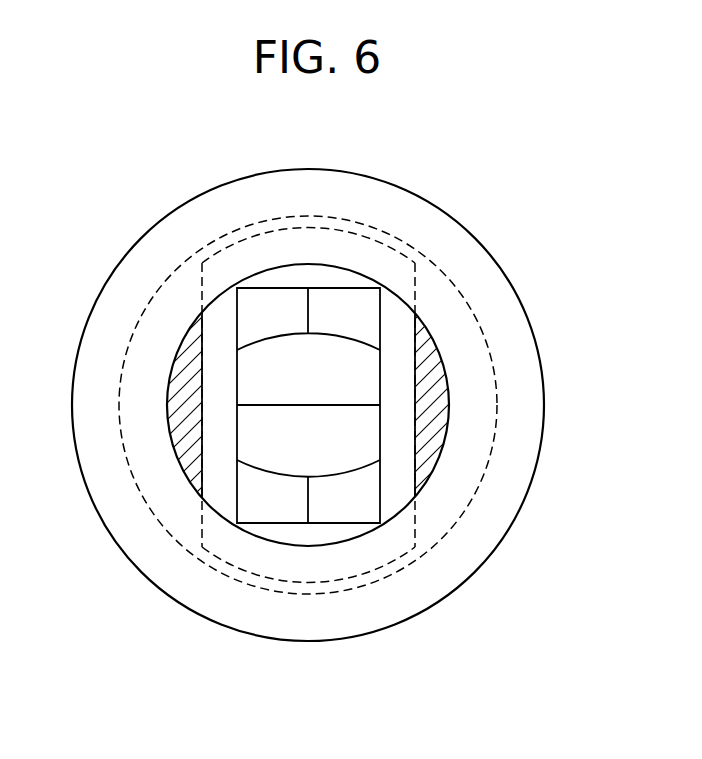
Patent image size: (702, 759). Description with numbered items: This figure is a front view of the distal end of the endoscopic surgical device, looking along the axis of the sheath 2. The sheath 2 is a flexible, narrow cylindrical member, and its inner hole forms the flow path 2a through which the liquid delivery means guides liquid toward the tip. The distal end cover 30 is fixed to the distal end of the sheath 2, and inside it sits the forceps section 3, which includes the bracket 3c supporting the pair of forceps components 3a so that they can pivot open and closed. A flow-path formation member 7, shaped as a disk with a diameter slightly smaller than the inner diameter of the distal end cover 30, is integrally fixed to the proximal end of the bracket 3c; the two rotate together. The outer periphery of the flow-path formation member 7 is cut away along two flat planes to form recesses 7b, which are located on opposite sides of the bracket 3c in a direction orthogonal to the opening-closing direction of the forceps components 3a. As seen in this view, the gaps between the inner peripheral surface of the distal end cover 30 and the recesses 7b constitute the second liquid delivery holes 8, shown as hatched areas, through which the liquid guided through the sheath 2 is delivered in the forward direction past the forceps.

The sheath 2 is at (331, 394).
The flow path 2a is at (486, 337).
The forceps section 3 is at (253, 409).
The forceps components 3a is at (344, 337).
The bracket 3c is at (237, 313).
The flow-path formation member 7 is at (382, 568).
The recesses 7b is at (198, 452).
The second liquid delivery holes 8 is at (446, 400).
The distal end cover 30 is at (460, 222).